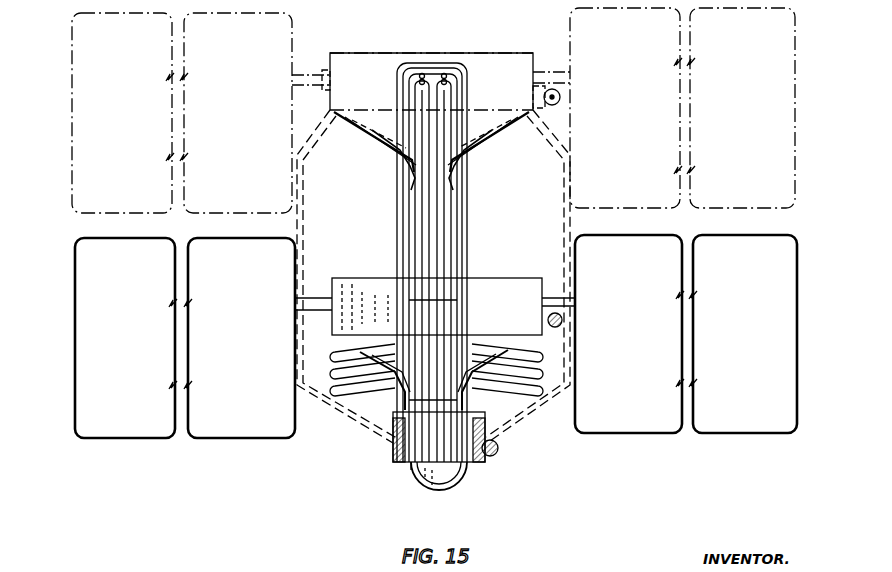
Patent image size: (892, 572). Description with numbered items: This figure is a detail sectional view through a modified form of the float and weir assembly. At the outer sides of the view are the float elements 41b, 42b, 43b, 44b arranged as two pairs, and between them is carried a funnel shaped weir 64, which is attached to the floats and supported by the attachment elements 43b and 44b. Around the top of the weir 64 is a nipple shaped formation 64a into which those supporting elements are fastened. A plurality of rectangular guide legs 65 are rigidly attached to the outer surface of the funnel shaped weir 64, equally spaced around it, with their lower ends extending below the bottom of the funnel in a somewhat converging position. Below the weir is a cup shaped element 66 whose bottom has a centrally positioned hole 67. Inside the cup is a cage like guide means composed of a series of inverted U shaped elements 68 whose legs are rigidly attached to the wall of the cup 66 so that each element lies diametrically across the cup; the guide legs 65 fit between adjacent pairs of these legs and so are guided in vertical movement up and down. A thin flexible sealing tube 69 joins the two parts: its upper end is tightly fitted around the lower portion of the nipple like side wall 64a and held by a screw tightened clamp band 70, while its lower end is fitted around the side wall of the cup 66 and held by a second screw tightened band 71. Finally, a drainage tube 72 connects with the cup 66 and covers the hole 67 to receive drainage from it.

The float element 41b is at (641, 434).
The float element 42b is at (215, 438).
The attachment element 43b is at (304, 74).
The attachment element 44b is at (562, 70).
The weir 64 is at (488, 128).
The nipple shaped formation 64a is at (468, 53).
The guide legs 65 is at (487, 154).
The cup shaped element 66 is at (400, 462).
The hole 67 is at (449, 468).
The inverted U shaped elements 68 is at (468, 212).
The sealing tube 69 is at (514, 418).
The clamp band 70 is at (561, 103).
The second band 71 is at (499, 452).
The drainage tube 72 is at (455, 505).